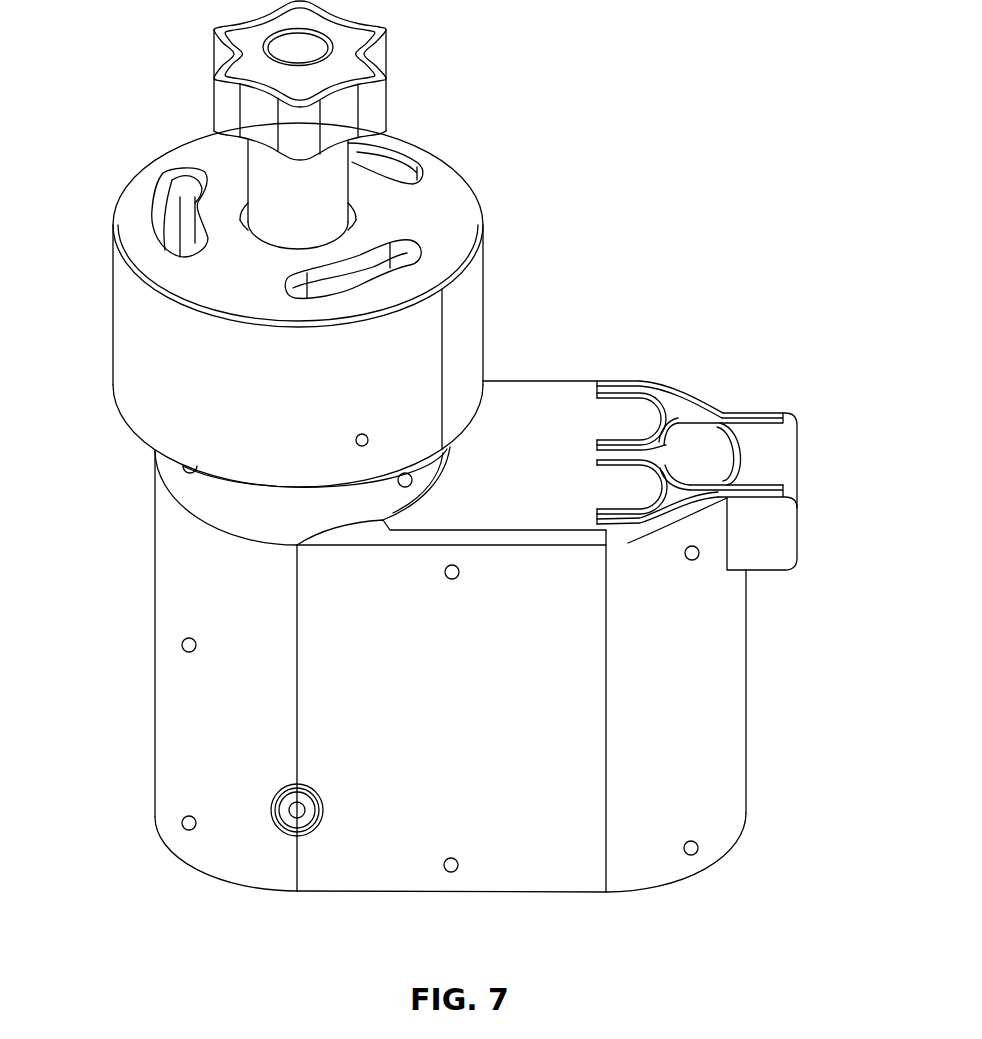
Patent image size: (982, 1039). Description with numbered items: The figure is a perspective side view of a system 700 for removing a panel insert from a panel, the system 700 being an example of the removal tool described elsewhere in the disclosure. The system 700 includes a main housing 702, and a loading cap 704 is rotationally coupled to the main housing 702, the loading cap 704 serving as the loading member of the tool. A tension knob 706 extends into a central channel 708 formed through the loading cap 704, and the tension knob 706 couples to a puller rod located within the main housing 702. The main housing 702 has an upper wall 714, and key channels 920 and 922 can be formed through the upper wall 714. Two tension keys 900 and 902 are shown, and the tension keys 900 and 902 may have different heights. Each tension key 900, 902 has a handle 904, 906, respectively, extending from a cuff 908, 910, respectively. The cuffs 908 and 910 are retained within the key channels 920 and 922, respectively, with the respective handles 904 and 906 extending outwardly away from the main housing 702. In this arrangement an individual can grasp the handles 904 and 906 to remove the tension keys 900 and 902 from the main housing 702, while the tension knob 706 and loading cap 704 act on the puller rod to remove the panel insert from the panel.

The system 700 is at (133, 58).
The main housing 702 is at (712, 753).
The loading cap 704 is at (488, 265).
The tension knob 706 is at (387, 48).
The central channel 708 is at (355, 219).
The upper wall 714 is at (535, 410).
The tension key 900 is at (747, 488).
The tension key 902 is at (725, 417).
The handle 904 is at (793, 497).
The handle 906 is at (797, 433).
The cuff 908 is at (617, 520).
The cuff 910 is at (623, 379).
The key channel 920 is at (640, 523).
The key channel 922 is at (677, 407).